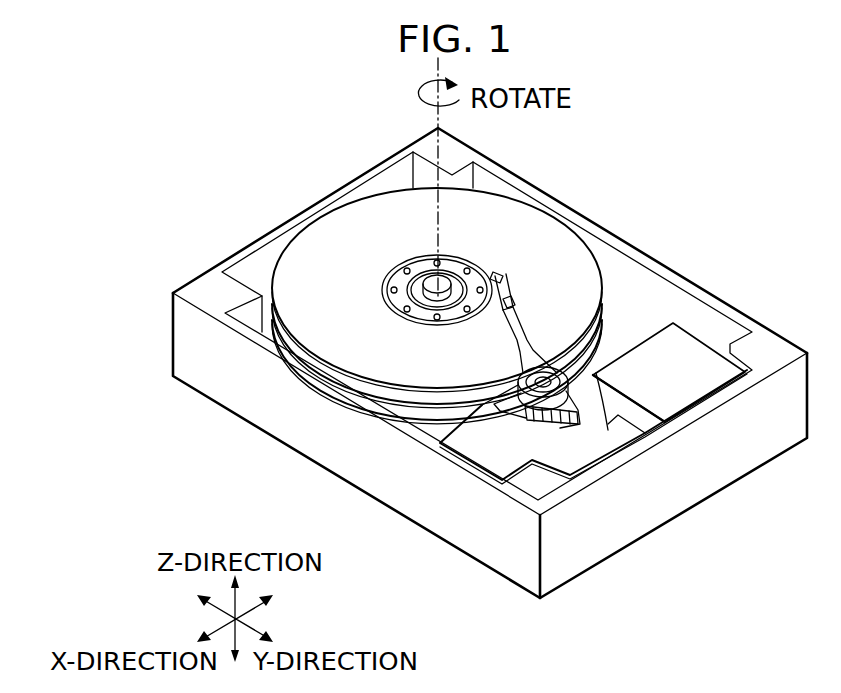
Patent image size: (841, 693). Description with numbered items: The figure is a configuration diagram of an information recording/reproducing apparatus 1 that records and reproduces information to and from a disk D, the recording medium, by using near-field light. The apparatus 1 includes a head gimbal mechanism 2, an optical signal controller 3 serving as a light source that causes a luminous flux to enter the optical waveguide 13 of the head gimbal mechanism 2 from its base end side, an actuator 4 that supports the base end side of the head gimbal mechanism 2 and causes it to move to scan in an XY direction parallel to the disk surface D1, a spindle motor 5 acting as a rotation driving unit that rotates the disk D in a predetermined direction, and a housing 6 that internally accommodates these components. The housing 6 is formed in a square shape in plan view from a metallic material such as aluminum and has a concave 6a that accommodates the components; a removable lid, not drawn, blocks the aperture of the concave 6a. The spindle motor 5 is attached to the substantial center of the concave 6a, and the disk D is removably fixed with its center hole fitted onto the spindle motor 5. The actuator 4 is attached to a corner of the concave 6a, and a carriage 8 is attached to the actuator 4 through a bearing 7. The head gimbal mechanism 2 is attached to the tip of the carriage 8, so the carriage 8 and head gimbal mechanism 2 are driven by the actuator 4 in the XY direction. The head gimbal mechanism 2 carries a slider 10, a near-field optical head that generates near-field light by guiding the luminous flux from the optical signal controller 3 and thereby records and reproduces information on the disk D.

The information recording/reproducing apparatus 1 is at (692, 134).
The head gimbal mechanism 2 is at (497, 282).
The optical signal controller 3 is at (688, 376).
The actuator 4 is at (563, 427).
The spindle motor 5 is at (430, 265).
The housing 6 is at (297, 214).
The concave 6a is at (257, 265).
The bearing 7 is at (573, 355).
The carriage 8 is at (533, 331).
The slider 10 is at (514, 291).
The optical waveguide 13 is at (590, 414).
The disk D is at (408, 373).
The disk surface D1 is at (318, 333).